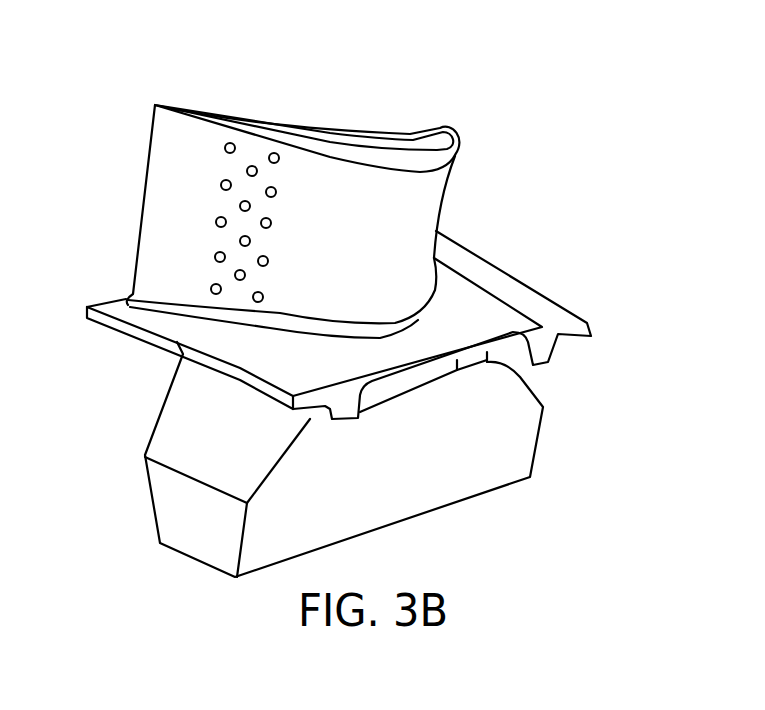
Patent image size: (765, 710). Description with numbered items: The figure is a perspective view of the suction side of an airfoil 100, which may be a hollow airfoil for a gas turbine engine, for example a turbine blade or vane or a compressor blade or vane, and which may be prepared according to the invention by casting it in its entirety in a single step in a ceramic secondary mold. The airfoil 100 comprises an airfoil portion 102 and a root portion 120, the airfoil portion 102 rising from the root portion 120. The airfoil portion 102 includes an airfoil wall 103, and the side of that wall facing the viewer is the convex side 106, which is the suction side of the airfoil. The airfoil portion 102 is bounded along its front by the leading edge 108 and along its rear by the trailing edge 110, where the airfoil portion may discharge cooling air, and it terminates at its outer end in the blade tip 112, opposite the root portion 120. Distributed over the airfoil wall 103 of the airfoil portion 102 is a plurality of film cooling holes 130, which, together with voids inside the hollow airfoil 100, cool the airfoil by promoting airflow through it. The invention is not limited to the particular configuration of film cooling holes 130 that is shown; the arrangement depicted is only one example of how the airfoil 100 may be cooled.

The airfoil 100 is at (548, 135).
The airfoil portion 102 is at (312, 104).
The airfoil wall 103 is at (385, 242).
The convex side 106 is at (187, 205).
The leading edge 108 is at (458, 141).
The trailing edge 110 is at (145, 167).
The blade tip 112 is at (459, 147).
The root portion 120 is at (413, 473).
The film cooling holes 130 is at (217, 275).